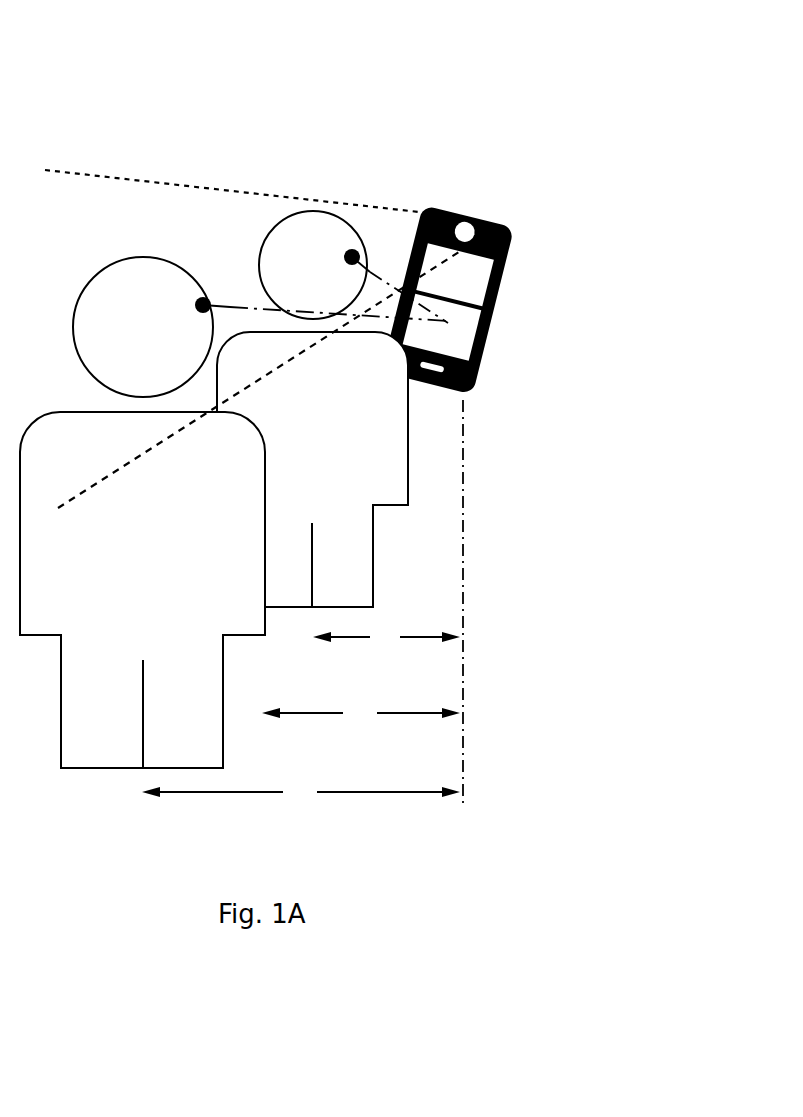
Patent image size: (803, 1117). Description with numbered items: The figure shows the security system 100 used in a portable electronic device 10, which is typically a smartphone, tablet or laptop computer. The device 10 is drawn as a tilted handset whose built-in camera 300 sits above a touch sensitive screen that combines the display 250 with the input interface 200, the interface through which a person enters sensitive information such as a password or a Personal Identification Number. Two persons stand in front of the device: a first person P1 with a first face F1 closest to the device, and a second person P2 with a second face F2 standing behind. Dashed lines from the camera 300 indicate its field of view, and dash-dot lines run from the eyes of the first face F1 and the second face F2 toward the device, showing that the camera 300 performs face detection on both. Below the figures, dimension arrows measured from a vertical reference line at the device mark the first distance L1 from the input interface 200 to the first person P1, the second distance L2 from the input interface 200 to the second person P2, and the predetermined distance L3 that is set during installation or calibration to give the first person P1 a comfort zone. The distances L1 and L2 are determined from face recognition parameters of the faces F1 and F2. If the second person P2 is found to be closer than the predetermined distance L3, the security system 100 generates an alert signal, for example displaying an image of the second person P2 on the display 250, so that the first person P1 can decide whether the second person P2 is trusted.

The security system 100 is at (461, 90).
The portable electronic device 10 is at (542, 329).
The camera 300 is at (498, 202).
The display 250 is at (455, 274).
The input interface 200 is at (442, 327).
The first face F1 is at (368, 215).
The second face F2 is at (203, 261).
The first person P1 is at (312, 469).
The second person P2 is at (142, 590).
The first distance L1 is at (386, 637).
The second distance L2 is at (301, 792).
The predetermined distance L3 is at (361, 713).